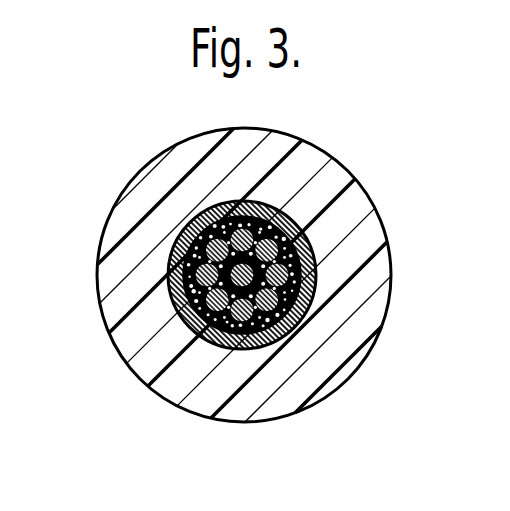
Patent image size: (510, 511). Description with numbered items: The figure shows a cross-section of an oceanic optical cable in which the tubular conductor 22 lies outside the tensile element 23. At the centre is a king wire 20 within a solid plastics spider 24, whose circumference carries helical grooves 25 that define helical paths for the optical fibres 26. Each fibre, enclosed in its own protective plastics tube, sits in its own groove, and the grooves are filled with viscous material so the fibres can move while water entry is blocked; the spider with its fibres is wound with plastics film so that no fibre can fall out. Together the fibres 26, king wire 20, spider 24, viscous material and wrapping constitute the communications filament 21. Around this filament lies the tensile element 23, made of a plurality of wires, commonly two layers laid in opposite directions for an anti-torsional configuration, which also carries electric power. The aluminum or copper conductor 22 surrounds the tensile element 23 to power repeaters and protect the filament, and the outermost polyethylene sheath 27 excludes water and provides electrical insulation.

The king wire 20 is at (278, 210).
The communications filament 21 is at (313, 287).
The tubular conductor 22 is at (190, 218).
The tensile element 23 is at (180, 308).
The spider 24 is at (232, 343).
The grooves 25 is at (168, 277).
The optical fibres 26 is at (298, 404).
The polyethylene sheath 27 is at (308, 167).